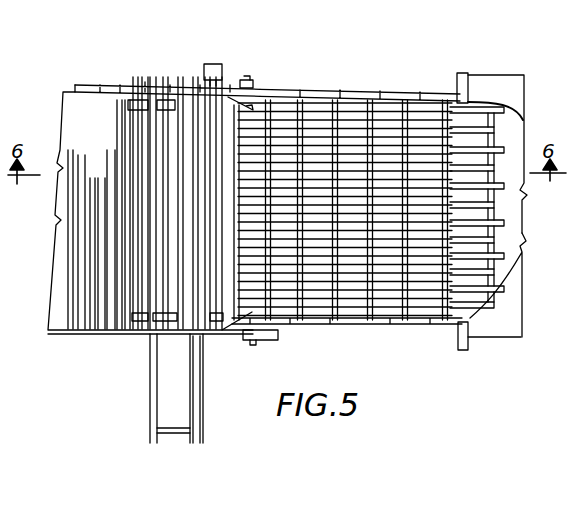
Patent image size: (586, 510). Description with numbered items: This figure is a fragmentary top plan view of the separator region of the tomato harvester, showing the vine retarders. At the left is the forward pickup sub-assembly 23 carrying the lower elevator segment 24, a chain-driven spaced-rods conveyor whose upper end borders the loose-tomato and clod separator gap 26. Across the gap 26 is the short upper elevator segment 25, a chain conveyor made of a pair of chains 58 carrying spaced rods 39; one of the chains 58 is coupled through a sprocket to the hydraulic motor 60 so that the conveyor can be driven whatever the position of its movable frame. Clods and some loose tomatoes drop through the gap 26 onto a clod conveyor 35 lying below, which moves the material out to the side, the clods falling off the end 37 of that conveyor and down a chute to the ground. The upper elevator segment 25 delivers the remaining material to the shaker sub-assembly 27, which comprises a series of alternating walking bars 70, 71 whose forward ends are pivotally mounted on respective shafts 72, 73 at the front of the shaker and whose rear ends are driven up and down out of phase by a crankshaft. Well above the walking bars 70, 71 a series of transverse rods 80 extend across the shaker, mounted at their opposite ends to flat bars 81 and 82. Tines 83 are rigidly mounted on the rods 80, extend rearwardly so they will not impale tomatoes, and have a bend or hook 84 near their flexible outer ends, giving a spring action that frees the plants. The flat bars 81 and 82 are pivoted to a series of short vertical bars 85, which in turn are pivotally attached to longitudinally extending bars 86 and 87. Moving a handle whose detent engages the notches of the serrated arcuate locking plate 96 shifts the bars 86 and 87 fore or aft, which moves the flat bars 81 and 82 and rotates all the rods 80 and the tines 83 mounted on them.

The forward pickup sub-assembly 23 is at (82, 337).
The lower elevator segment 24 is at (100, 180).
The upper elevator segment 25 is at (182, 88).
The separator gap 26 is at (150, 82).
The shaker sub-assembly 27 is at (410, 97).
The clod conveyor 35 is at (195, 372).
The end of clod conveyor 37 is at (177, 433).
The spaced rods 39 is at (172, 148).
The chains 58 is at (188, 100).
The hydraulic motor 60 is at (218, 63).
The walking bar 70 is at (524, 236).
The walking bar 71 is at (525, 192).
The shaft 72 is at (245, 85).
The shaft 73 is at (254, 327).
The transverse rods 80 is at (307, 295).
The flat bar 81 is at (446, 92).
The flat bar 82 is at (351, 322).
The tines 83 is at (270, 110).
The bend or hook 84 is at (284, 107).
The short vertical bars 85 is at (338, 97).
The longitudinally extending bar 86 is at (373, 97).
The longitudinally extending bar 87 is at (415, 322).
The serrated arcuate locking plate 96 is at (457, 74).